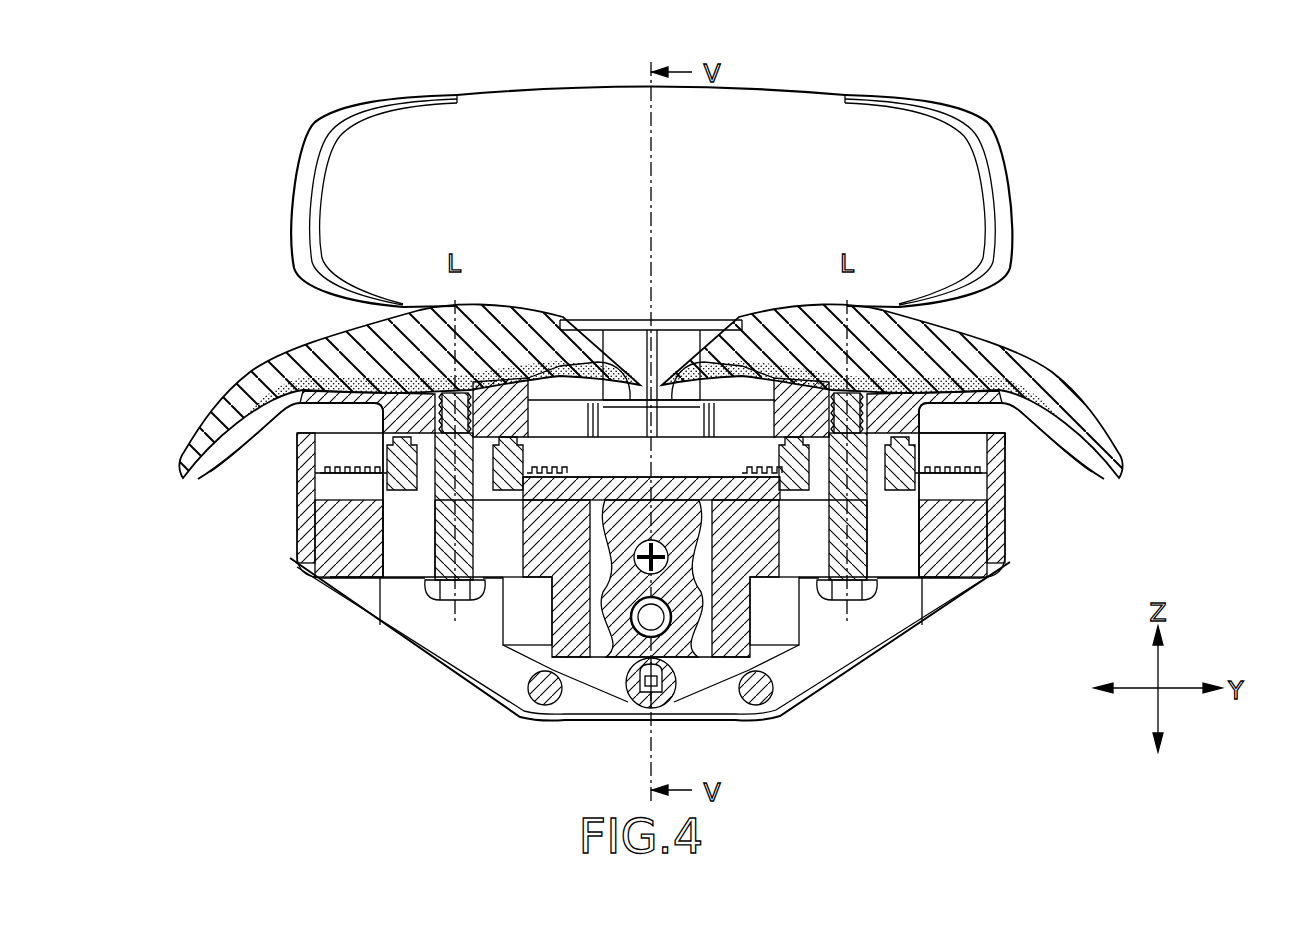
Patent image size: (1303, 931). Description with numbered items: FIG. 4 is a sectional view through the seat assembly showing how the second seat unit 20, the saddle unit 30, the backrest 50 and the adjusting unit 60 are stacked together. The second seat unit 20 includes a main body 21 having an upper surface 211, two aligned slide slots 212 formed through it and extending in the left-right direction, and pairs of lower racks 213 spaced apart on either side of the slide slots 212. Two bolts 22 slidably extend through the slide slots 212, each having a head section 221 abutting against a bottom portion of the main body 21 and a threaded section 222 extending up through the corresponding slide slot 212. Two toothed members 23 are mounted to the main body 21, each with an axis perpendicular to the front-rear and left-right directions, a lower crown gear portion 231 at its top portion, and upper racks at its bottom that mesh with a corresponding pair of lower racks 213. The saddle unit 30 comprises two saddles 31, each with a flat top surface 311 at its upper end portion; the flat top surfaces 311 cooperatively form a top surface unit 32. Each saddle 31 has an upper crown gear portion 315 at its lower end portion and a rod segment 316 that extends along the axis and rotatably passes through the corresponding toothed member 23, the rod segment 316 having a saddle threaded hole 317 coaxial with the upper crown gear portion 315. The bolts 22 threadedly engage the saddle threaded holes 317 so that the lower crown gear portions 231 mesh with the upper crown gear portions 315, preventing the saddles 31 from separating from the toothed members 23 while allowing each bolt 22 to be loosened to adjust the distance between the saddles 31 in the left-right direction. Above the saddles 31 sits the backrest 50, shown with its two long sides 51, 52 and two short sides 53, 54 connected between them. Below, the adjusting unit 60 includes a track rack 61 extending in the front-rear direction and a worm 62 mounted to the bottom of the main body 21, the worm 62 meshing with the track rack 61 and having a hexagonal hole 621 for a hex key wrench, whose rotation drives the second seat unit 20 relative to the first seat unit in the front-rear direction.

The second seat unit 20 is at (650, 639).
The main body 21 is at (958, 604).
The bolts 22 is at (445, 545).
The toothed members 23 is at (400, 478).
The saddle unit 30 is at (704, 390).
The saddles 31 is at (960, 325).
The top surface unit 32 is at (498, 305).
The backrest 50 is at (677, 175).
The long side 51 is at (733, 86).
The long side 52 is at (669, 320).
The short side 53 is at (291, 182).
The short side 54 is at (1014, 207).
The adjusting unit 60 is at (613, 723).
The track rack 61 is at (666, 705).
The worm 62 is at (630, 702).
The upper surface 211 is at (583, 470).
The slide slots 212 is at (395, 548).
The lower racks 213 is at (370, 470).
The head section 221 is at (850, 600).
The threaded section 222 is at (965, 360).
The lower crown gear portion 231 is at (1010, 428).
The flat top surface 311 is at (409, 341).
The upper crown gear portion 315 is at (1074, 418).
The rod segment 316 is at (427, 470).
The saddle threaded hole 317 is at (935, 412).
The hexagonal hole 621 is at (646, 708).